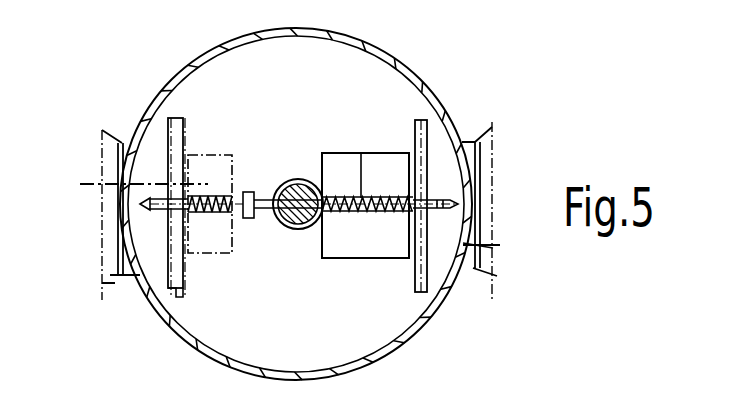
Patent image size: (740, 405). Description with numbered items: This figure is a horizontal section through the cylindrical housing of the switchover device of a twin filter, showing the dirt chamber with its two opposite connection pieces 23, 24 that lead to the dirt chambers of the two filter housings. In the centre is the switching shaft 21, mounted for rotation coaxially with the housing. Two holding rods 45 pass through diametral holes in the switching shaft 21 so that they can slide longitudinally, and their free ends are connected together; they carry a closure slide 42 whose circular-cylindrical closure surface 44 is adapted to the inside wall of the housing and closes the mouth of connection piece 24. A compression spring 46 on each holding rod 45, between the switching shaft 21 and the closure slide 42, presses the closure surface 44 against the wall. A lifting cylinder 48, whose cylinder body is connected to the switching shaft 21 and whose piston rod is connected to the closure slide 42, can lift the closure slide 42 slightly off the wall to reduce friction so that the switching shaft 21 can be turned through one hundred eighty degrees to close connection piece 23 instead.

The switching shaft 21 is at (291, 231).
The connection piece 23 is at (118, 276).
The connection piece 24 is at (478, 268).
The closure slide 42 is at (158, 142).
The closure surface 44 is at (483, 257).
The holding rods 45 is at (276, 185).
The compression spring 46 is at (361, 153).
The lifting cylinder 48 is at (326, 153).